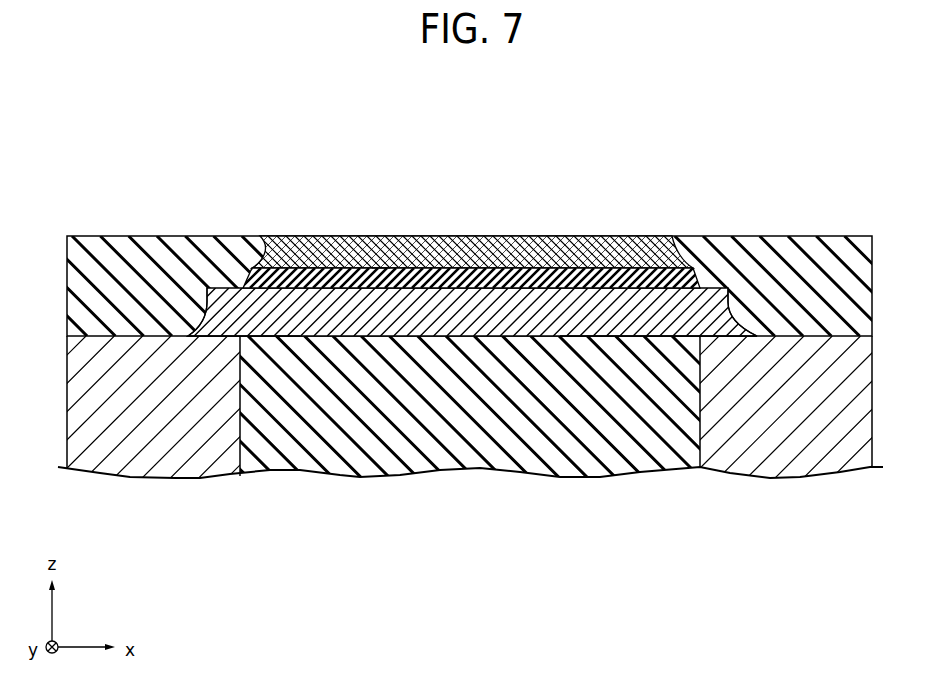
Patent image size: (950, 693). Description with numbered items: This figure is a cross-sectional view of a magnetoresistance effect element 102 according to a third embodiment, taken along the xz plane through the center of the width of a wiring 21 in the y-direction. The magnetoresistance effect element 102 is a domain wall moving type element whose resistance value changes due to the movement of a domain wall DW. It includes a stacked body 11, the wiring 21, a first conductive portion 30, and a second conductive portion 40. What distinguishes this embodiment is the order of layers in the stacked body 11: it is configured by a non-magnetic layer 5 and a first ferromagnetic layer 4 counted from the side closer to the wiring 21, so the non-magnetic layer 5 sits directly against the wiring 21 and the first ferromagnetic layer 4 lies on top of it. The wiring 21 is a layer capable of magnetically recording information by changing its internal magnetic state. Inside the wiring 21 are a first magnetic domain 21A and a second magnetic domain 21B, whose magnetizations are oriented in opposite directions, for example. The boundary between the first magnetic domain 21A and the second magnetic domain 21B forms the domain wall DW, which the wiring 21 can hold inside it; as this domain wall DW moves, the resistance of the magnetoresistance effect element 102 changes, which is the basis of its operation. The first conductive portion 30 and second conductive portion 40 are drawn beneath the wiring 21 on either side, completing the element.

The magnetoresistance effect element 102 is at (770, 202).
The stacked body 11 is at (475, 204).
The first ferromagnetic layer 4 is at (440, 273).
The non-magnetic layer 5 is at (472, 270).
The domain wall DW is at (380, 273).
The wiring 21 is at (427, 340).
The first magnetic domain 21A is at (290, 336).
The second magnetic domain 21B is at (578, 337).
The first conductive portion 30 is at (123, 457).
The second conductive portion 40 is at (802, 450).